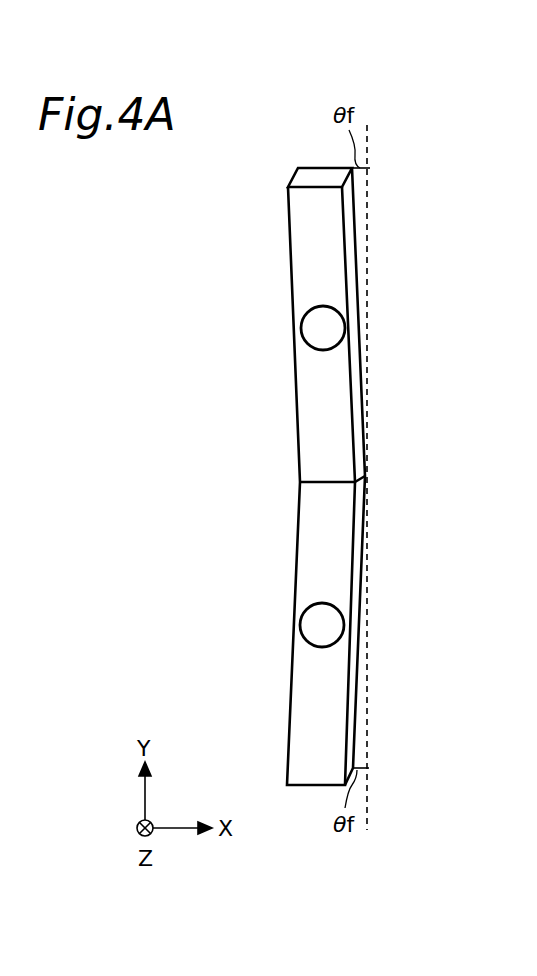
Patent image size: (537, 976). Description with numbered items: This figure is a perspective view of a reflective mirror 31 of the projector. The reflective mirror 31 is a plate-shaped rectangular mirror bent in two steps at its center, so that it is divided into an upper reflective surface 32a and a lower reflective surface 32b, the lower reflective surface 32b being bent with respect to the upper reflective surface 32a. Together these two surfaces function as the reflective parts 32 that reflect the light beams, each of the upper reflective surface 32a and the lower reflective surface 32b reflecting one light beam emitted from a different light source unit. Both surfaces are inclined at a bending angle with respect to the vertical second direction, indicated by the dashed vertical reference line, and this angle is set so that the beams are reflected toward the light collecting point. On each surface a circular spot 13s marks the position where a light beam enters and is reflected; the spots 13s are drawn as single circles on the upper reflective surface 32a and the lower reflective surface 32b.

The reflective mirror 31 is at (256, 162).
The reflective parts 32 is at (458, 212).
The upper reflective surface 32a is at (333, 225).
The lower reflective surface 32b is at (333, 522).
The spot 13s is at (320, 622).